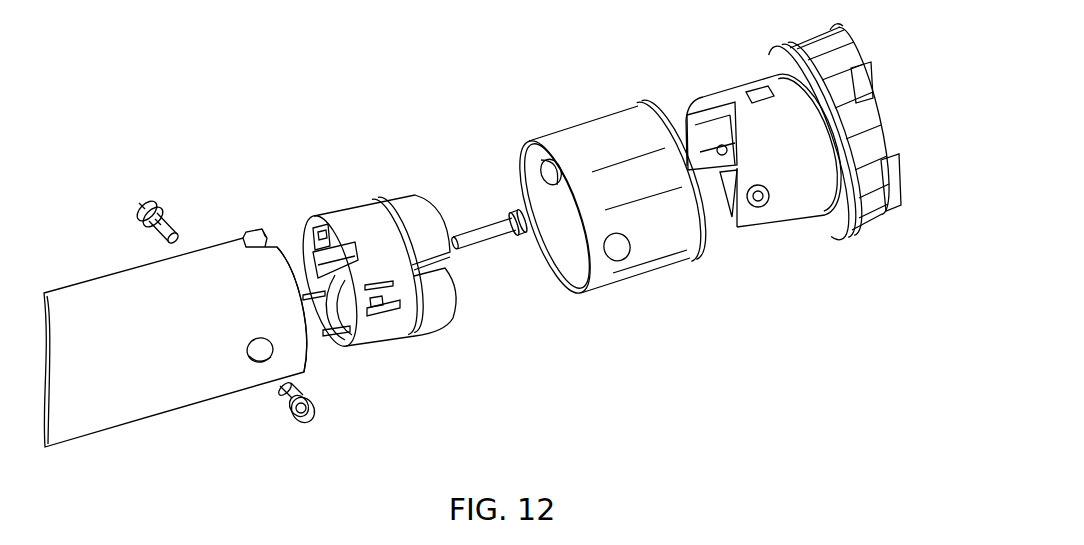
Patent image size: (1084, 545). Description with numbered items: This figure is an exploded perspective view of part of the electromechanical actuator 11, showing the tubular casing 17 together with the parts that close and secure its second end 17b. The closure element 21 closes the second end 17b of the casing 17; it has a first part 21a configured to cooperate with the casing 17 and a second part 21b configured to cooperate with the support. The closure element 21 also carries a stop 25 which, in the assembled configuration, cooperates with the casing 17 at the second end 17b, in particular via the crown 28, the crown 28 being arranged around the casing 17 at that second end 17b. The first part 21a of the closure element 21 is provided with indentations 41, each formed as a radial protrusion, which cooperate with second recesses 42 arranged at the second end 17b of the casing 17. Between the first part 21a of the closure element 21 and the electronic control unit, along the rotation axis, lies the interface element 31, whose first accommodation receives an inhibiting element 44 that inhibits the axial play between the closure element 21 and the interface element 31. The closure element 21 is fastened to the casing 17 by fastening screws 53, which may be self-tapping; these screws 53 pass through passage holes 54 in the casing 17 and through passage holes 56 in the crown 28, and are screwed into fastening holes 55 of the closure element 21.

The electromechanical actuator 11 is at (218, 87).
The casing 17 is at (87, 290).
The second end 17b is at (312, 358).
The closure element 21 is at (873, 126).
The first part 21a is at (732, 95).
The second part 21b is at (878, 212).
The stop 25 is at (838, 230).
The crown 28 is at (578, 140).
The interface element 31 is at (355, 213).
The indentations 41 is at (757, 92).
The second recesses 42 is at (258, 231).
The inhibiting element 44 is at (490, 235).
The fastening screws 53 is at (147, 200).
The passage holes 54 is at (252, 352).
The fastening holes 55 is at (758, 200).
The passage holes 56 is at (550, 172).